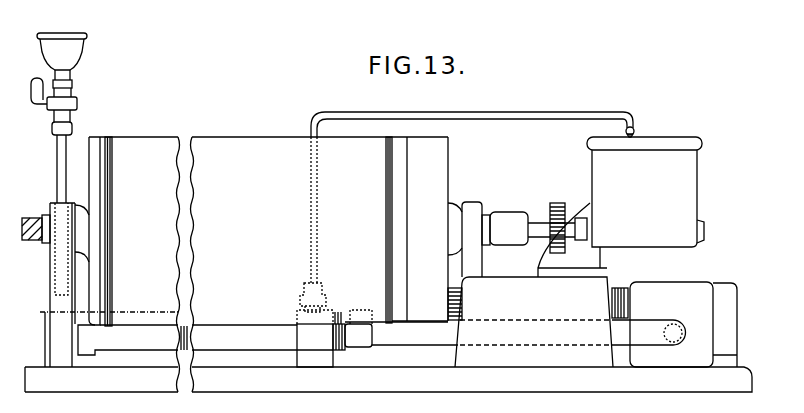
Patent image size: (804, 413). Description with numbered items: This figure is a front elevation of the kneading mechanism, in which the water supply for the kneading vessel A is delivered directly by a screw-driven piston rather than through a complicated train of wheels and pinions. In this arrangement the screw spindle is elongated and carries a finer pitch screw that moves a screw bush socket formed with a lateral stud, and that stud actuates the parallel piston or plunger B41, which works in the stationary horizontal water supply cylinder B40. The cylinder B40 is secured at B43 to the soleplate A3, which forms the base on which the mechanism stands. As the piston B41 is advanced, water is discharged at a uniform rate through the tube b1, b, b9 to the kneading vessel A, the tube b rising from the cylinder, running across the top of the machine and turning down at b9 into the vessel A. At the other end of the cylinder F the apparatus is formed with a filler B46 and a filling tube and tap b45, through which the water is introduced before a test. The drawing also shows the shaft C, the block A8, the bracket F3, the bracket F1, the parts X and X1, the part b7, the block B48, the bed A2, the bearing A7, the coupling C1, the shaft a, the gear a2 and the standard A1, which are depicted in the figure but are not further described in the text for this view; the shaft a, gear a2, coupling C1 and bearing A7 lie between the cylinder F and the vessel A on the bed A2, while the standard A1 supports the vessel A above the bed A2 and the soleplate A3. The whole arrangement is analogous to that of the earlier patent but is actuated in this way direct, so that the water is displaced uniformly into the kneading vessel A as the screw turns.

The filler B46 is at (59, 84).
The filling tube and tap b45 is at (57, 167).
The shaft C is at (36, 229).
The bearing block A8 is at (109, 285).
The securing point B43 is at (46, 314).
The bracket F3 is at (83, 233).
The cylinder F is at (82, 181).
The frame bracket F1 is at (455, 224).
The partition X is at (253, 231).
The partition plate X1 is at (112, 268).
The tube b is at (315, 122).
The tube b9 is at (636, 124).
The tube b1 is at (318, 262).
The nozzle b7 is at (316, 298).
The stationary horizontal water supply cylinder B40 is at (187, 340).
The block B48 is at (316, 364).
The parallel piston or plunger B41 is at (515, 317).
The bed A2 is at (596, 322).
The bearing A7 is at (476, 239).
The coupling C1 is at (500, 247).
The shaft a is at (557, 229).
The gear a2 is at (557, 203).
The standard A1 is at (572, 240).
The kneading vessel A is at (645, 192).
The soleplate A3 is at (388, 379).